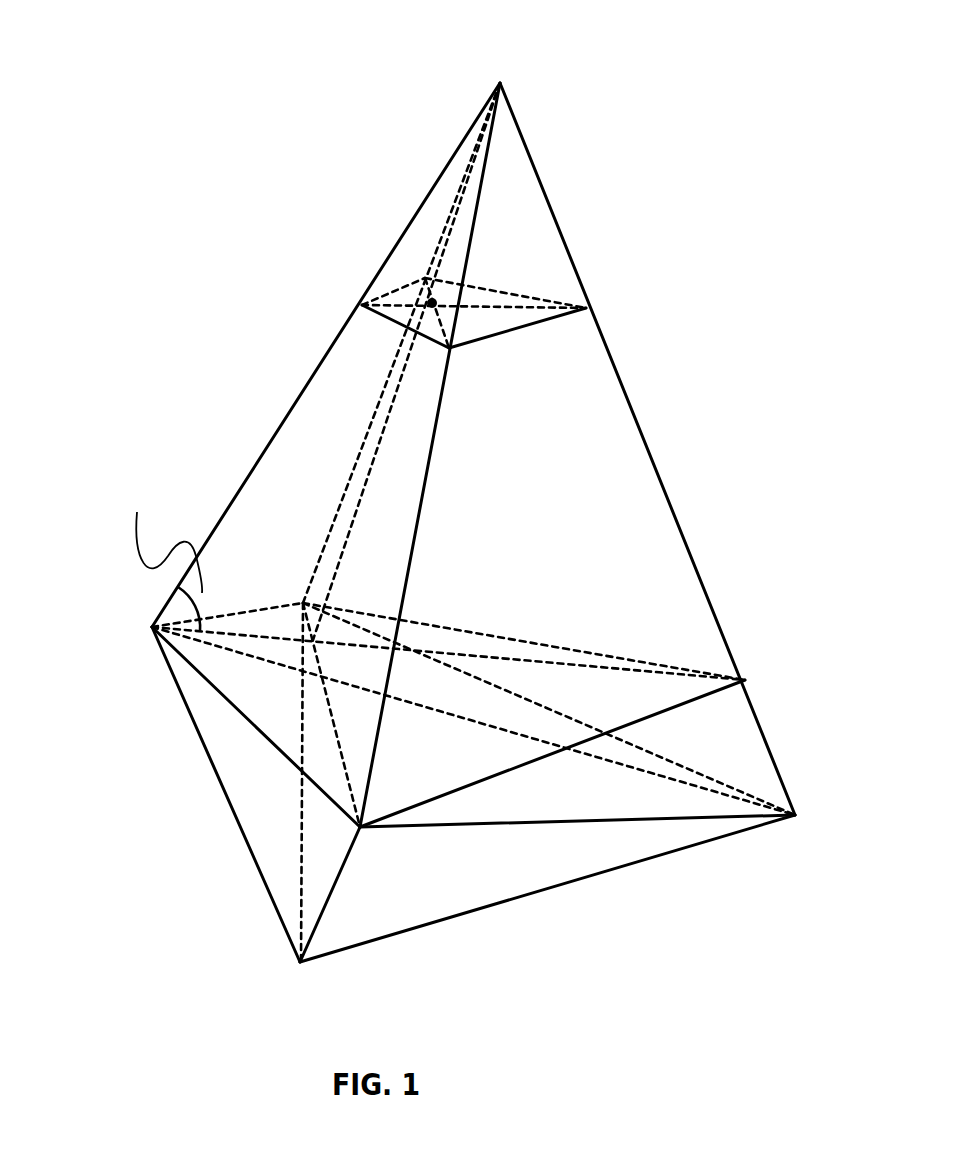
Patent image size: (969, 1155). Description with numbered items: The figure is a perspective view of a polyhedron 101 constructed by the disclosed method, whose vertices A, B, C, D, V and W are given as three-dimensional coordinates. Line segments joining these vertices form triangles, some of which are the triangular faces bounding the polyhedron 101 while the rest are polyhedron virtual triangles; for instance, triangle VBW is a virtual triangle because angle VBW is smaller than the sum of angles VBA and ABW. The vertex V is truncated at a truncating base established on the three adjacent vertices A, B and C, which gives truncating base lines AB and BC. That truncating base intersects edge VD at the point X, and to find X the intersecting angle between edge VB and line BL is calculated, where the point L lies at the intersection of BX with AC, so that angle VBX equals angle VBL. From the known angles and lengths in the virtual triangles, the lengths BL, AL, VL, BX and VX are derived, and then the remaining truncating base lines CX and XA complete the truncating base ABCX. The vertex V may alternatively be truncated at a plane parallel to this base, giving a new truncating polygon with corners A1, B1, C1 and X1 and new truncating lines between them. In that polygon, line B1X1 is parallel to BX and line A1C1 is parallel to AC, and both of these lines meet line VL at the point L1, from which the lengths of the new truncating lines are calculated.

The polyhedron 101 is at (430, 499).
The vertex V is at (473, 440).
The vertex B is at (238, 774).
The vertex W is at (528, 904).
The vertex C is at (558, 766).
The vertex D is at (488, 716).
The point X is at (462, 646).
The vertex A is at (326, 522).
The point L is at (316, 645).
The point B1 is at (453, 319).
The point X1 is at (527, 313).
The point C1 is at (454, 337).
The point A1 is at (393, 281).
The point L1 is at (432, 303).